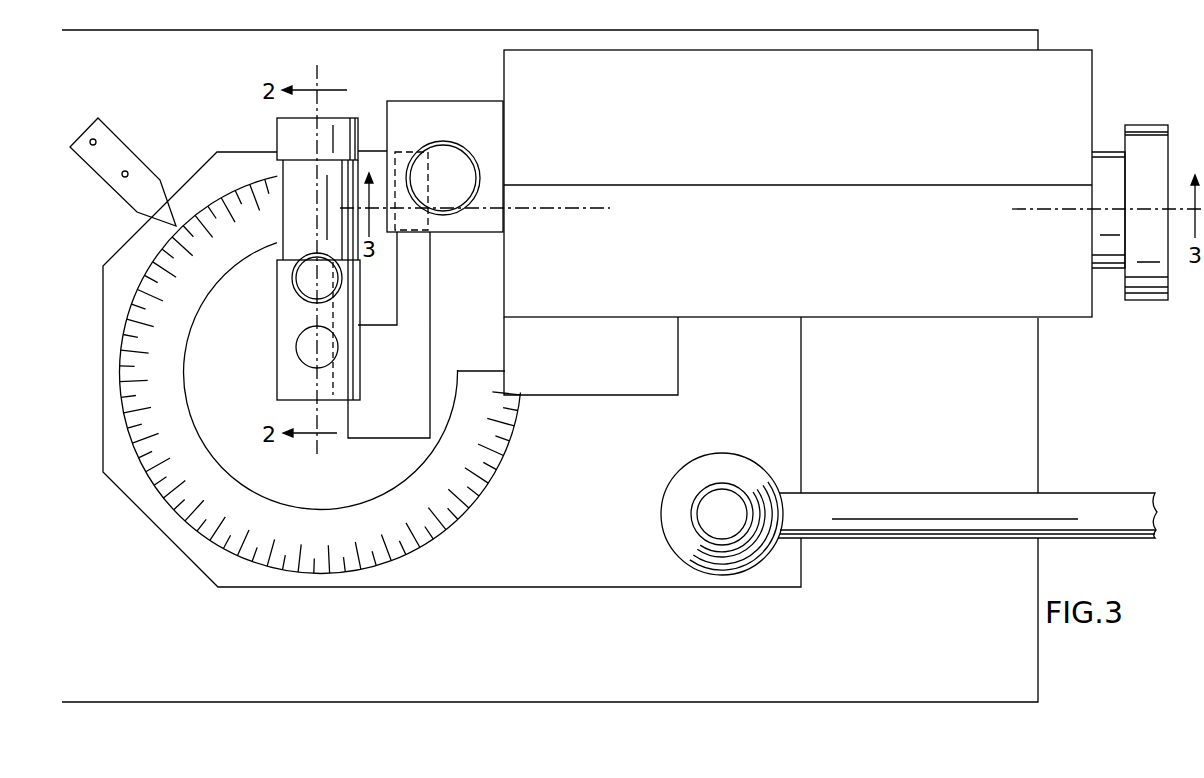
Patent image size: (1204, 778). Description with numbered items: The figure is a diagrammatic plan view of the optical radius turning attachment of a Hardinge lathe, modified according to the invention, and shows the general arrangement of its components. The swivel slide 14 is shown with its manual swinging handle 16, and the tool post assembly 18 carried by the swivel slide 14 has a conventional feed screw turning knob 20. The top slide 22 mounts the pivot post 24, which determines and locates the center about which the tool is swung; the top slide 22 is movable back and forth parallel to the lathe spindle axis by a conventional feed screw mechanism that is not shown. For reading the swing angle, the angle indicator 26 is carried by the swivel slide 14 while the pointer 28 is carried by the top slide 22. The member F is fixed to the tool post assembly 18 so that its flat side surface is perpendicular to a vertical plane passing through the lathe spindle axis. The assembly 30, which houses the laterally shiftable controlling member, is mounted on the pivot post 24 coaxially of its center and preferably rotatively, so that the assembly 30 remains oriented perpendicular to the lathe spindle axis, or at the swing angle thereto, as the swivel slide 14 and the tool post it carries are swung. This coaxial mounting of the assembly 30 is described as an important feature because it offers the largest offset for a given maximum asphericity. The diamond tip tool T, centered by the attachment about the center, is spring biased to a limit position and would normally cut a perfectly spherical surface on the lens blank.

The swivel slide 14 is at (551, 580).
The manual swinging handle 16 is at (1067, 497).
The tool post assembly 18 is at (952, 44).
The feed screw turning knob 20 is at (1143, 125).
The top slide 22 is at (615, 695).
The pivot post 24 is at (282, 492).
The angle indicator 26 is at (195, 507).
The pointer 28 is at (132, 157).
The assembly 30 is at (260, 335).
The member F is at (423, 328).
The diamond tip tool T is at (346, 412).